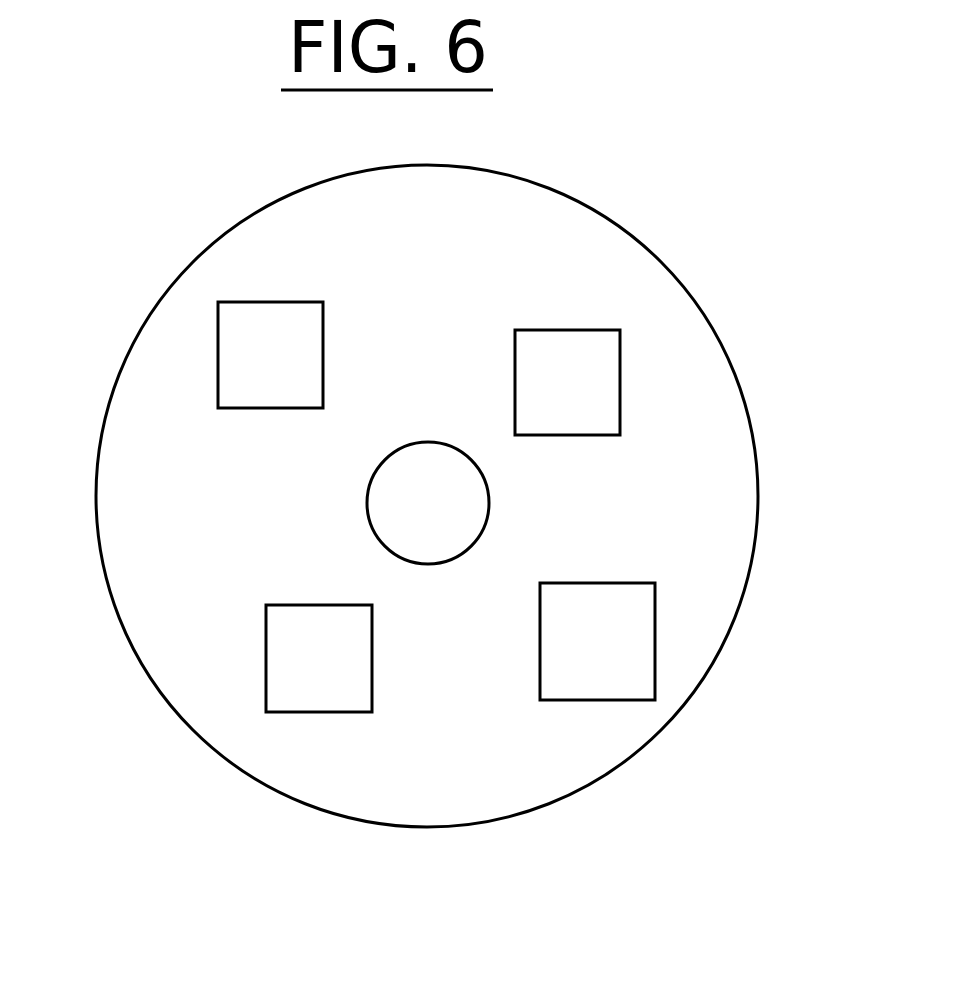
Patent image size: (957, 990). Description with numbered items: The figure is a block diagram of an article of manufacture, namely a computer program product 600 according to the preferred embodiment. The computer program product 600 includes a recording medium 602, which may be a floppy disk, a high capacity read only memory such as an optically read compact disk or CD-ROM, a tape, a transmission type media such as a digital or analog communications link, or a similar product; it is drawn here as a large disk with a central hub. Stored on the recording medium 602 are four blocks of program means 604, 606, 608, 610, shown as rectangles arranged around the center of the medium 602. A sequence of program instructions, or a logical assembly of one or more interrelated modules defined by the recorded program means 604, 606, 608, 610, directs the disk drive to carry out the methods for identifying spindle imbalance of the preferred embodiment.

The computer program product 600 is at (709, 280).
The recording medium 602 is at (153, 307).
The program means 604 is at (567, 382).
The program means 606 is at (597, 641).
The program means 608 is at (319, 658).
The program means 610 is at (270, 355).